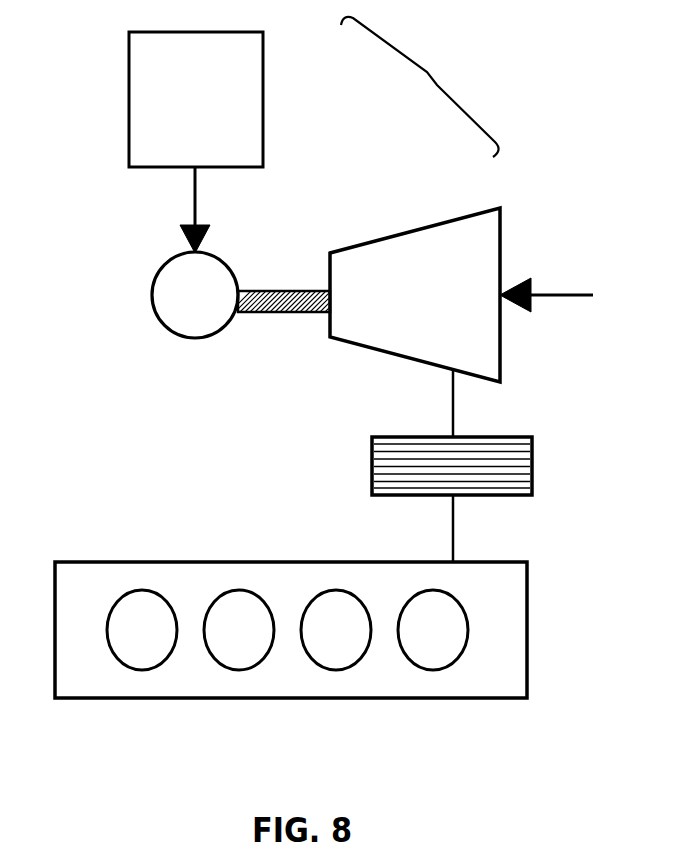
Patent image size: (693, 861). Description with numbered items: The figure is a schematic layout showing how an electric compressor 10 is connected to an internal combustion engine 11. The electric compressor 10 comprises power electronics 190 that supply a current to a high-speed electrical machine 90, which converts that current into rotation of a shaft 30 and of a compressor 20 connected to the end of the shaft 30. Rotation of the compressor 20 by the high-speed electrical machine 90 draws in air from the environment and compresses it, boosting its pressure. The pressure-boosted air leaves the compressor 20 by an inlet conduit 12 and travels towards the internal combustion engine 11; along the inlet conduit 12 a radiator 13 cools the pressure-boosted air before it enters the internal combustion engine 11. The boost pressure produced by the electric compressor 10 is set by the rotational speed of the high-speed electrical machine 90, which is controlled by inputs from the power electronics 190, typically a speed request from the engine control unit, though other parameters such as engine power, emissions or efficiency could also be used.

The electric compressor 10 is at (427, 72).
The internal combustion engine 11 is at (502, 607).
The inlet conduit 12 is at (453, 405).
The radiator 13 is at (532, 463).
The compressor 20 is at (442, 222).
The shaft 30 is at (303, 290).
The high-speed electrical machine 90 is at (223, 280).
The power electronics 190 is at (208, 87).